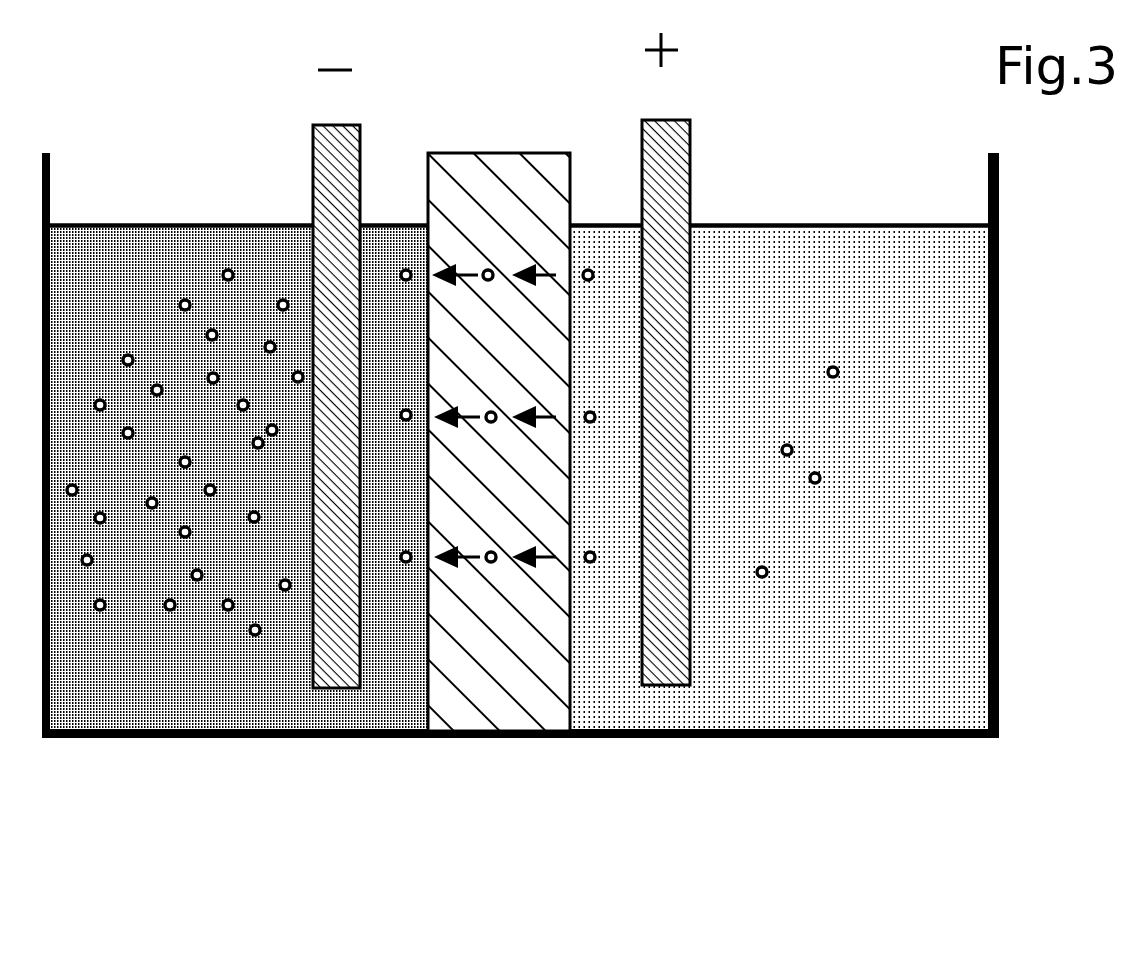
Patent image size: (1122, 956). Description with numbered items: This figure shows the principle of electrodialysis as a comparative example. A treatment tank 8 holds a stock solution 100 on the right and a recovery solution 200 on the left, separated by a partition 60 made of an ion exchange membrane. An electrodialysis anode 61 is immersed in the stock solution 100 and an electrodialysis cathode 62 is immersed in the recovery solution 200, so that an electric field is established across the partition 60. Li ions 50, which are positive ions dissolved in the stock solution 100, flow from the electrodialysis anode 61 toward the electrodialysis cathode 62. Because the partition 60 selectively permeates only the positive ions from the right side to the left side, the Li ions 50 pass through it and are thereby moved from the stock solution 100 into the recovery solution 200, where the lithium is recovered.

The treatment tank 8 is at (998, 600).
The Li ion 50 is at (190, 280).
The partition 60 is at (510, 710).
The electrodialysis anode 61 is at (662, 685).
The electrodialysis cathode 62 is at (333, 688).
The stock solution 100 is at (877, 690).
The recovery solution 200 is at (130, 693).